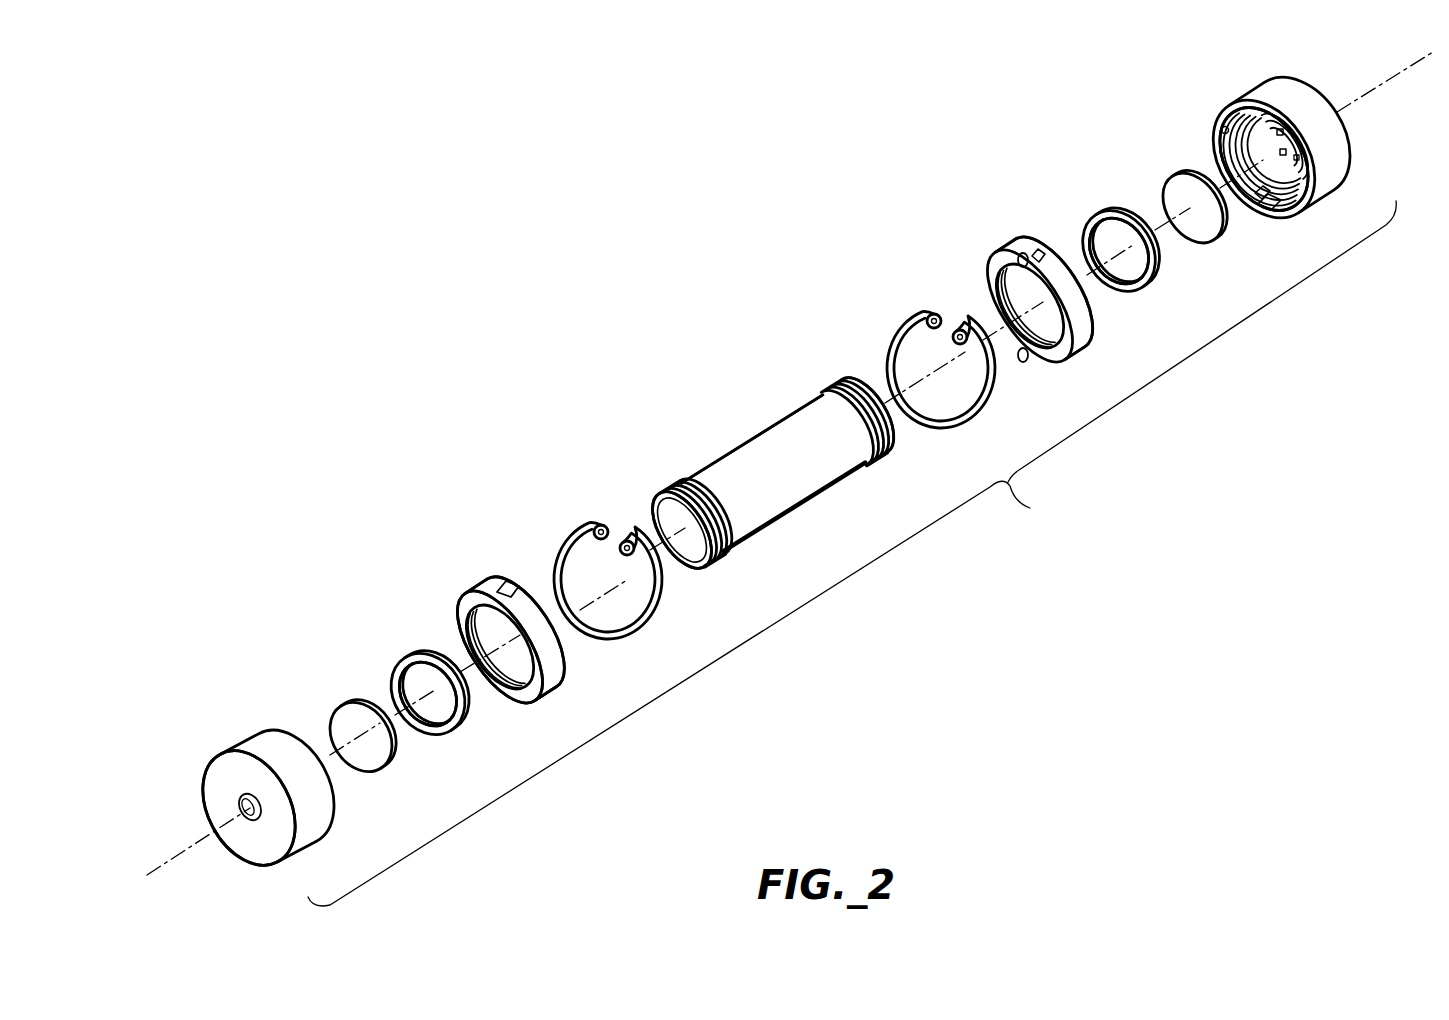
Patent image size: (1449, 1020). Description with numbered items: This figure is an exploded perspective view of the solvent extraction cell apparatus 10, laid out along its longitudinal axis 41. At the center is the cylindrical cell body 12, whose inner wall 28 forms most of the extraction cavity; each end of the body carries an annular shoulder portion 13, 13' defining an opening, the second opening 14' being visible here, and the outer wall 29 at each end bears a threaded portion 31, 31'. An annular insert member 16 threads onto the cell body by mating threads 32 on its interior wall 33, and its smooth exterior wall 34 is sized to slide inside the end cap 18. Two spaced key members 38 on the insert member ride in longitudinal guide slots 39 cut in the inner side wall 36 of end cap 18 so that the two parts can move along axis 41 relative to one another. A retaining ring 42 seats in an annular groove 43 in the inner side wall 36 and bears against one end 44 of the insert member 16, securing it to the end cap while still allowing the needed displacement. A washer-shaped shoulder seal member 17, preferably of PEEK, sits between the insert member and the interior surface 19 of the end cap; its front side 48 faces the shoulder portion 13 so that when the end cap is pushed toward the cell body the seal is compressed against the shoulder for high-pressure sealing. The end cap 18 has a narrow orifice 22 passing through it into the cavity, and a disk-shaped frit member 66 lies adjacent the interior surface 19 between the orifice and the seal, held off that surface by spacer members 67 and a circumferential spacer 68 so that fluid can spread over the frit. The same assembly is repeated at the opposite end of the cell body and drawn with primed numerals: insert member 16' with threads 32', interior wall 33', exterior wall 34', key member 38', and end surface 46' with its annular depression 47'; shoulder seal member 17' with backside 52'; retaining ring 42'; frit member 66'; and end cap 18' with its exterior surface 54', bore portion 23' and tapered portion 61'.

The extraction cell apparatus 10 is at (852, 553).
The cell body 12 is at (793, 518).
The shoulder portion 13 is at (907, 468).
The shoulder portion 13' is at (725, 578).
The opening 14' is at (691, 555).
The insert member 16 is at (1053, 299).
The nut 16' is at (544, 639).
The shoulder seal member 17 is at (1106, 244).
The washer 17' is at (444, 711).
The end cap 18 is at (1268, 147).
The end cap 18' is at (282, 798).
The interior surface 19 is at (1297, 212).
The orifice 22 is at (1285, 149).
The aperture 23' is at (230, 852).
The inner wall 28 is at (680, 508).
The outer wall 29 is at (778, 430).
The threaded portion 31 is at (847, 400).
The threaded portion 31' is at (687, 501).
The mating threads 32 is at (988, 306).
The internal threads 32' is at (458, 645).
The interior wall 33 is at (1030, 336).
The inner surface 33' is at (508, 667).
The exterior wall 34 is at (1067, 291).
The outer surface 34' is at (458, 575).
The inner side wall 36 is at (1258, 200).
The key members 38 is at (1034, 296).
The detent 38' is at (484, 564).
The guide slots 39 is at (1270, 210).
The axis 41 is at (1380, 87).
The retaining ring 42 is at (956, 385).
The snap ring 42' is at (580, 571).
The annular groove 43 is at (1223, 131).
The end of insert member 44 is at (993, 272).
The outer wall 46' is at (530, 643).
The front face 47' is at (500, 668).
The front side 48 is at (1140, 288).
The washer opening 52' is at (428, 722).
The end face 54' is at (249, 815).
The aperture 61' is at (206, 804).
The frit member 66 is at (1194, 223).
The disc 66' is at (342, 727).
The spacer members 67 is at (1281, 129).
The circumferential spacer 68 is at (1278, 128).